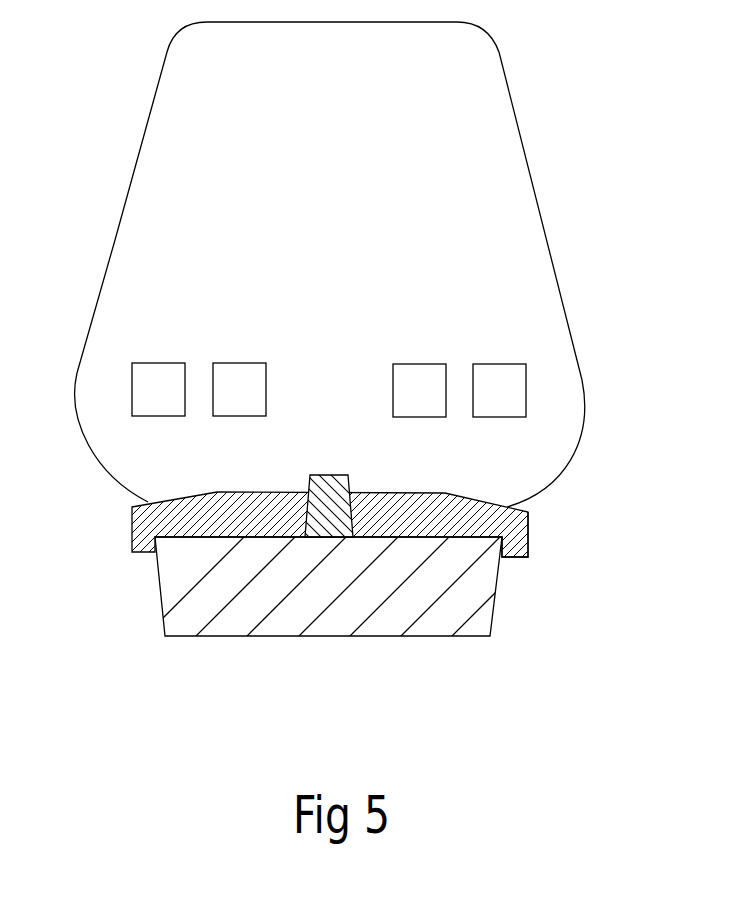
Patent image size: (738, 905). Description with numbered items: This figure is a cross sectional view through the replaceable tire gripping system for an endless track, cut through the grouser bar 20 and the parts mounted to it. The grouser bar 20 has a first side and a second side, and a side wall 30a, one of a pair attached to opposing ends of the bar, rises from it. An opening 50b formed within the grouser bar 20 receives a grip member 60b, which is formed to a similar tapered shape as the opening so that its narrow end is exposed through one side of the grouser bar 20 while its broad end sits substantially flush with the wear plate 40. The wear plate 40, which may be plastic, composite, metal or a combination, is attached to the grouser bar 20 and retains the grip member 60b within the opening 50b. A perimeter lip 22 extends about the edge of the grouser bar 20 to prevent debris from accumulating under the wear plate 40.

The side wall 30a is at (460, 232).
The grouser bar 20 is at (443, 515).
The perimeter lip 22 is at (520, 560).
The wear plate 40 is at (443, 613).
The opening 50b is at (312, 508).
The grip member 60b is at (325, 515).